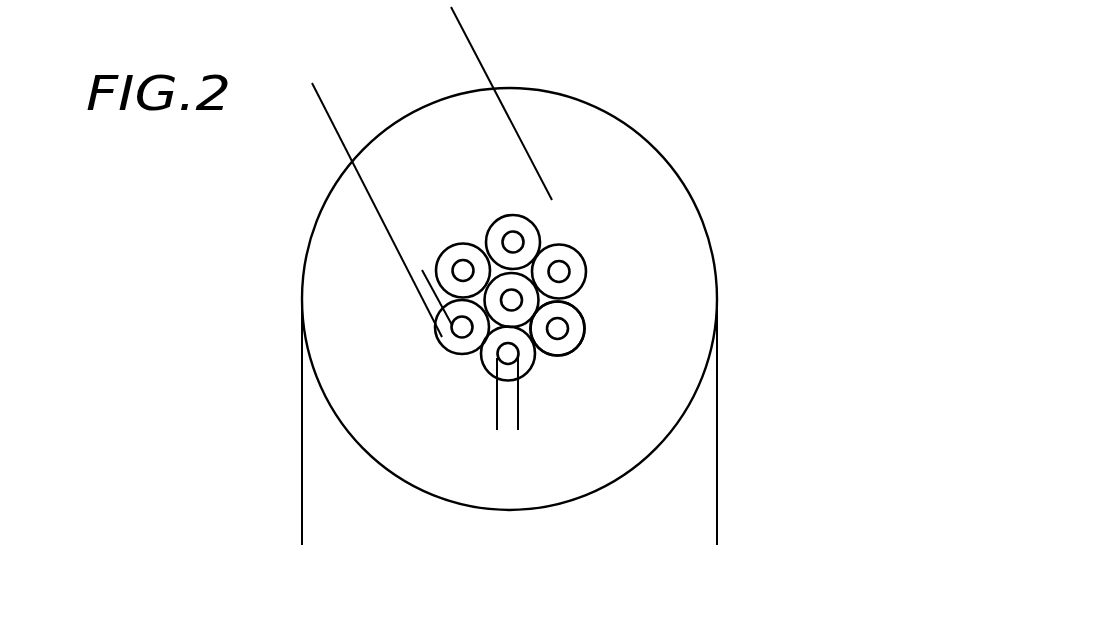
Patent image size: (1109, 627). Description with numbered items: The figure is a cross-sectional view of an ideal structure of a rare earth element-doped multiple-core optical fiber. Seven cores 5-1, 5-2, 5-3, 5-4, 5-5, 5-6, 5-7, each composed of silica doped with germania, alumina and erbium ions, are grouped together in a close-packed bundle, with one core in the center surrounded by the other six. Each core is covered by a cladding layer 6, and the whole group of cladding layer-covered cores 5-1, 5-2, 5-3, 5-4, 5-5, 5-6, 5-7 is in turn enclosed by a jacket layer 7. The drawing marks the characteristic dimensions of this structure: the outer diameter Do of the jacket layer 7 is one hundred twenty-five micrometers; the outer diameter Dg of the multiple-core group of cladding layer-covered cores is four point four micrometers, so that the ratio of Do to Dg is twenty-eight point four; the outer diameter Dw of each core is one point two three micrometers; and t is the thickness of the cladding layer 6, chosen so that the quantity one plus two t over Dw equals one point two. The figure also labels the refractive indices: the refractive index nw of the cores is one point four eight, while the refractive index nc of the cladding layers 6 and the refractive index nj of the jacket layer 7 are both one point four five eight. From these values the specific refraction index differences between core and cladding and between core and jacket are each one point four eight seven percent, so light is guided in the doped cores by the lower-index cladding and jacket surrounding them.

The core 5-1 is at (557, 266).
The core 5-2 is at (573, 338).
The core 5-3 is at (498, 368).
The core 5-4 is at (463, 333).
The core 5-5 is at (456, 272).
The core 5-6 is at (506, 293).
The core 5-7 is at (508, 238).
The cladding layer 6 is at (573, 326).
The jacket layer 7 is at (640, 423).
The refractive index of the jacket layer nj is at (330, 240).
The refractive index of the cores nw is at (565, 273).
The refractive index of the cladding layers nc is at (577, 282).
The outer diameter of the cladding layer-covered cores Dg is at (462, 28).
The outer diameter of each core Dw is at (472, 409).
The outer diameter of the jacket layer Do is at (717, 532).
The thickness of the cladding layer t is at (460, 286).